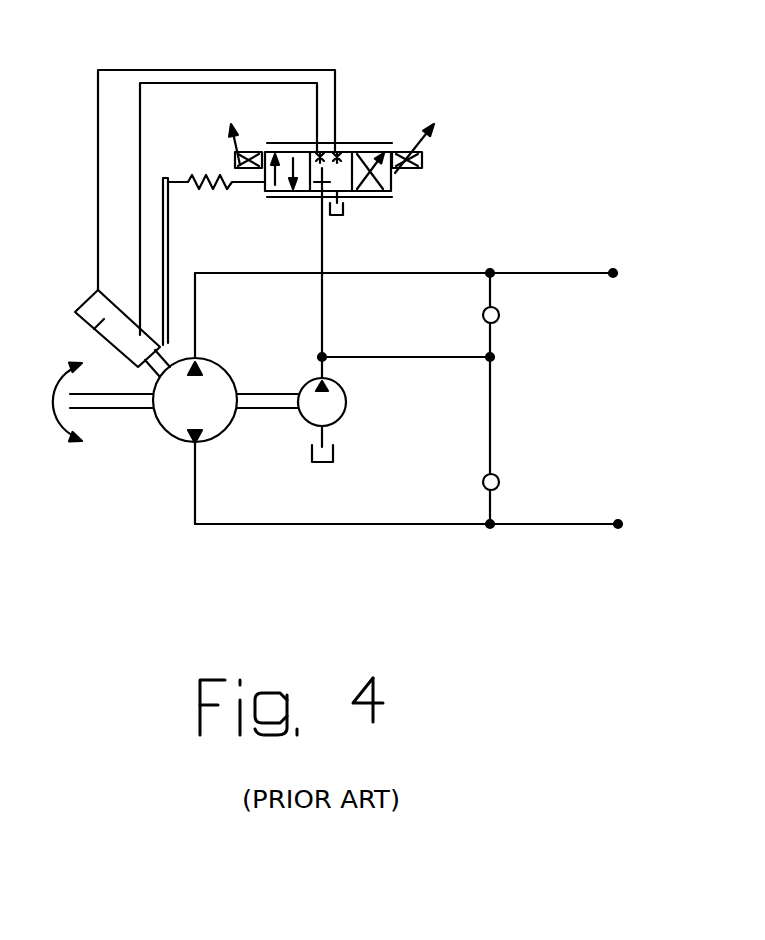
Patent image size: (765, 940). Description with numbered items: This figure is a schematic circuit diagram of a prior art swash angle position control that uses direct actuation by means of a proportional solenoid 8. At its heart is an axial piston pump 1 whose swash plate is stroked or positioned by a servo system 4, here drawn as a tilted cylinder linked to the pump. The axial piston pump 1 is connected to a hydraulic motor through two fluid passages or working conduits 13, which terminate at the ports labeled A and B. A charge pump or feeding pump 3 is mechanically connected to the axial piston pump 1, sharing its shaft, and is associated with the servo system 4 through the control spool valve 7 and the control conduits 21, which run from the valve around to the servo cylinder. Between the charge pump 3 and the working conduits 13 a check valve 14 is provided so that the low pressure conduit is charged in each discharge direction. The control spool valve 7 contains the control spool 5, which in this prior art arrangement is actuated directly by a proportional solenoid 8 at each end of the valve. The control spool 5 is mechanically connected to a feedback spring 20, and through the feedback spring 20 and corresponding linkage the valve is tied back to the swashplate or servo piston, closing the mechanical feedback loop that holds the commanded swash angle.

The axial piston pump 1 is at (160, 448).
The charge pump 3 is at (347, 410).
The servo system 4 is at (95, 325).
The control spool 5 is at (393, 183).
The control spool valve 7 is at (367, 140).
The proportional solenoid 8 is at (235, 158).
The working conduits 13 is at (563, 522).
The check valve 14 is at (500, 475).
The feedback spring 20 is at (223, 193).
The control conduits 21 is at (163, 83).